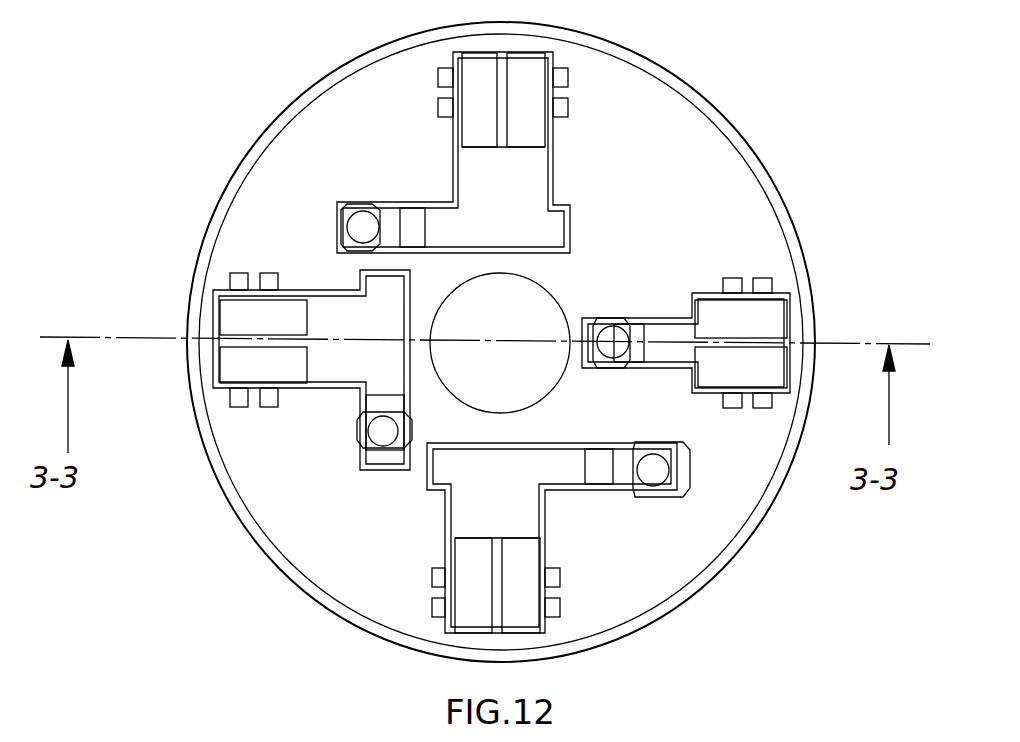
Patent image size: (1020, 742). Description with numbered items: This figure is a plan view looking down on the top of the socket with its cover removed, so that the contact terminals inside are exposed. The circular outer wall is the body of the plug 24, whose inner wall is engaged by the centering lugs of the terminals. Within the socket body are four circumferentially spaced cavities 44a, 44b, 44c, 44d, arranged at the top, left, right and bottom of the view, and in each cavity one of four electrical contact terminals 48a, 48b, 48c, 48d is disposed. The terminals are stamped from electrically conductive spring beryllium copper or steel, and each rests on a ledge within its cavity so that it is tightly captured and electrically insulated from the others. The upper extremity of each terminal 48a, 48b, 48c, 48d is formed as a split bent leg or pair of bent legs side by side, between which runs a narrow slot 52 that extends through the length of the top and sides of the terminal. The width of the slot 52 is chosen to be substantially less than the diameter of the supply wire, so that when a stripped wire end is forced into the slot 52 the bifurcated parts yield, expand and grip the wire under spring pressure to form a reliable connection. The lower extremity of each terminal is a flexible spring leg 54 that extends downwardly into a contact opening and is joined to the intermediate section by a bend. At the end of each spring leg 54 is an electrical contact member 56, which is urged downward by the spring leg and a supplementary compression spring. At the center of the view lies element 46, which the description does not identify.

The plug body 24 is at (300, 98).
The cavity 44a is at (315, 288).
The cavity 44b is at (445, 524).
The cavity 44c is at (712, 316).
The cavity 44d is at (572, 228).
The central shaft 46 is at (468, 380).
The electrical contact terminal 48a is at (390, 333).
The electrical contact terminal 48b is at (515, 513).
The electrical contact terminal 48c is at (710, 305).
The electrical contact terminal 48d is at (530, 174).
The slot 52 is at (503, 95).
The spring leg 54 is at (420, 215).
The electrical contact member 56 is at (375, 205).